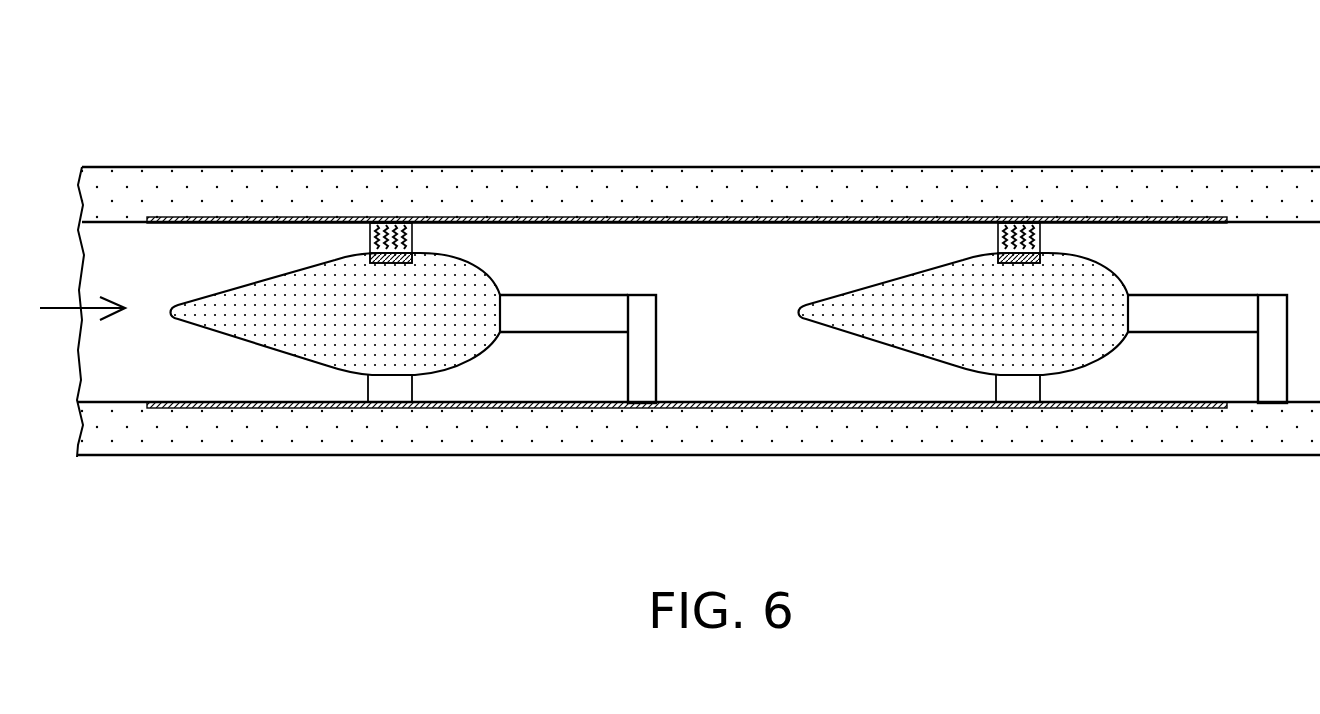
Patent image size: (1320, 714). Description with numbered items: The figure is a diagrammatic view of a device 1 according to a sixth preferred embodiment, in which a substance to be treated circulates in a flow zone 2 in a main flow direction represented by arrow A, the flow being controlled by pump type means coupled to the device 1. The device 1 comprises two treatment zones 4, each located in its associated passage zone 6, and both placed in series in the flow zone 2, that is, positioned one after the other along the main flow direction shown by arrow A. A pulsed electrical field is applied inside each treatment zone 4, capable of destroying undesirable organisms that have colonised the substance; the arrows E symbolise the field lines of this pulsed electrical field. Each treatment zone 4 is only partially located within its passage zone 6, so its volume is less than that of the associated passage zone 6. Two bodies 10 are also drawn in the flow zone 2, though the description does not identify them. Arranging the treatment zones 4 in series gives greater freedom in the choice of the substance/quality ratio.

The device 1 is at (1105, 98).
The flow zone 2 is at (732, 276).
The treatment zone 4 is at (363, 222).
The passage zone 6 is at (386, 386).
The flow body 10 is at (266, 344).
The field lines E is at (412, 232).
The main flow direction A is at (82, 297).